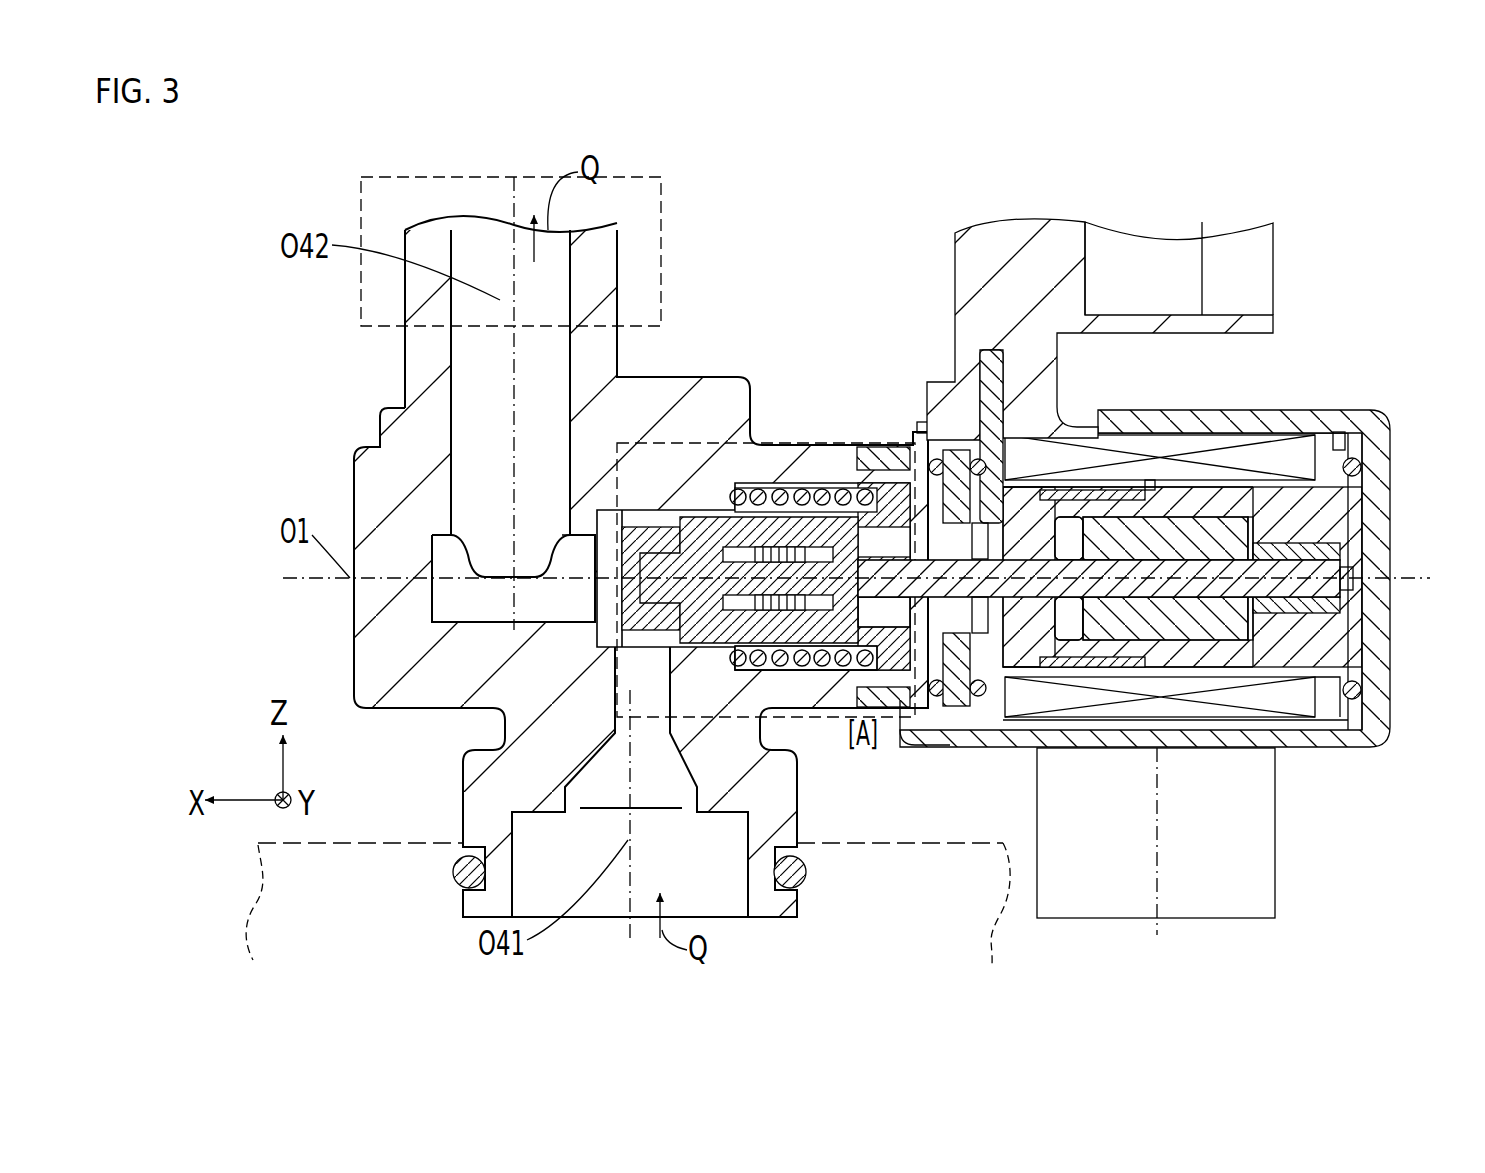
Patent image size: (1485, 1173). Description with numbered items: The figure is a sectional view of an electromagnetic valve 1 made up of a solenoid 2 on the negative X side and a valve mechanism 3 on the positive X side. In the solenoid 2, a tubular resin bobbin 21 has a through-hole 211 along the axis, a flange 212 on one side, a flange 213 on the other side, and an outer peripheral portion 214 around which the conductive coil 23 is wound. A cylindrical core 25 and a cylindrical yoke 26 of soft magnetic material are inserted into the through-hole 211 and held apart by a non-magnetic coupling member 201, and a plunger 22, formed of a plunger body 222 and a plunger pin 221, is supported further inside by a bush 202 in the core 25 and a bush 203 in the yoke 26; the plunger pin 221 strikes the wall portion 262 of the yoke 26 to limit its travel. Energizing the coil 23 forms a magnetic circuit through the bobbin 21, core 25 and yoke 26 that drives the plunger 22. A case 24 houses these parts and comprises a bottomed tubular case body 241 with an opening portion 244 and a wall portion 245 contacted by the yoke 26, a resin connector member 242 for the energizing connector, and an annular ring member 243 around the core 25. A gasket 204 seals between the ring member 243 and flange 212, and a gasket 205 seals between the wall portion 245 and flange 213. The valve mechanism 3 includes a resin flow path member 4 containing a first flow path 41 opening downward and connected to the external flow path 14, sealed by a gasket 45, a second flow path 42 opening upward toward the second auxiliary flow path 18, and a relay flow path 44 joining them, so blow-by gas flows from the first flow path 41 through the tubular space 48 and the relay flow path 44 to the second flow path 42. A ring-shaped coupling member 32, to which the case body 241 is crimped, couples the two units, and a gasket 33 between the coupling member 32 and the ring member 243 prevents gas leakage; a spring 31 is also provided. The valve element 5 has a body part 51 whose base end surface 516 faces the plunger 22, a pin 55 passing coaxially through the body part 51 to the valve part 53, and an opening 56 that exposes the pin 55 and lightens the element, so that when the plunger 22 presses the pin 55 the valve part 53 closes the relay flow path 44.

The electromagnetic valve 1 is at (1408, 166).
The solenoid 2 is at (1360, 318).
The valve mechanism 3 is at (345, 352).
The flow path member 4 is at (360, 447).
The valve element 5 is at (730, 322).
The external flow path 14 is at (385, 843).
The second auxiliary flow path 18 is at (362, 210).
The bobbin 21 is at (1340, 500).
The plunger 22 is at (1215, 470).
The coil 23 is at (1130, 490).
The case 24 is at (1392, 418).
The core 25 is at (1027, 615).
The yoke 26 is at (1245, 640).
The spring 31 is at (875, 447).
The coupling member 32 is at (917, 426).
The gasket 33 is at (947, 700).
The first flow path 41 is at (593, 897).
The second flow path 42 is at (478, 232).
The relay flow path 44 is at (580, 547).
The gasket 45 is at (806, 870).
The tubular space 48 is at (800, 665).
The body part 51 is at (850, 484).
The valve part 53 is at (662, 525).
The pin 55 is at (728, 550).
The opening 56 is at (782, 540).
The coupling member 201 is at (1090, 655).
The bush 202 is at (1060, 640).
The bush 203 is at (1350, 720).
The gasket 204 is at (1000, 700).
The gasket 205 is at (1362, 470).
The through-hole 211 is at (1300, 520).
The flange 212 is at (995, 370).
The flange 213 is at (1350, 447).
The outer peripheral portion 214 is at (1172, 496).
The plunger pin 221 is at (1150, 640).
The plunger body 222 is at (1195, 640).
The case body 241 is at (1365, 745).
The connector member 242 is at (1028, 243).
The ring member 243 is at (937, 458).
The opening portion 244 is at (893, 717).
The wall portion 245 is at (1383, 515).
The wall portion 262 is at (1345, 600).
The surface 516 is at (930, 640).